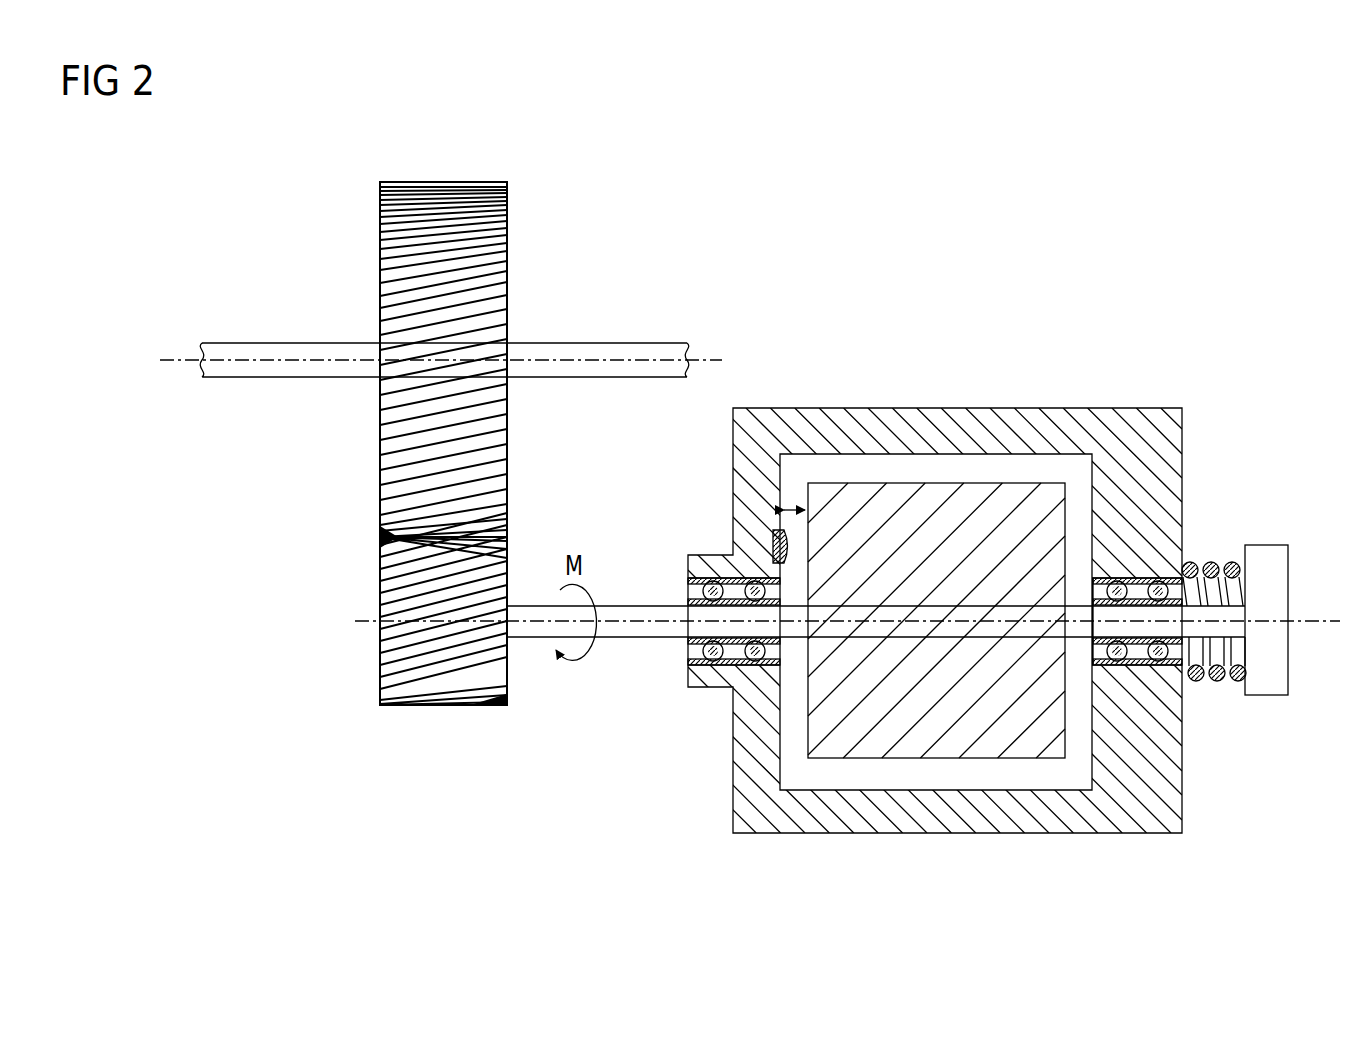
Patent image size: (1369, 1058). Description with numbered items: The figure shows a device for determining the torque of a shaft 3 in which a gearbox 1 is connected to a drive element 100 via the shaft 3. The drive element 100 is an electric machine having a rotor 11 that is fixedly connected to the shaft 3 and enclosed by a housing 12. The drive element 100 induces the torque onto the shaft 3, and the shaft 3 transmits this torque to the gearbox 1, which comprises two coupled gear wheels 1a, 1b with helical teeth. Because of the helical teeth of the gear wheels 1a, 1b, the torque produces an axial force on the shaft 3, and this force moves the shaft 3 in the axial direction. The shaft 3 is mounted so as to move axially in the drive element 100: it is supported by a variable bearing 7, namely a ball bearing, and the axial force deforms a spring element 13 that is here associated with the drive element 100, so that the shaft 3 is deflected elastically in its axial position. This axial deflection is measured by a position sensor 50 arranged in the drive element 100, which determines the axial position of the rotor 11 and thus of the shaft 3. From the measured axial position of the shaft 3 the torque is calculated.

The gearbox 1 is at (467, 439).
The gear wheel 1a is at (441, 692).
The gear wheel 1b is at (437, 190).
The shaft 3 is at (222, 370).
The variable bearing 7 is at (722, 574).
The rotor 11 is at (877, 508).
The housing 12 is at (930, 818).
The spring element 13 is at (1219, 692).
The position sensor 50 is at (773, 535).
The drive element 100 is at (980, 621).